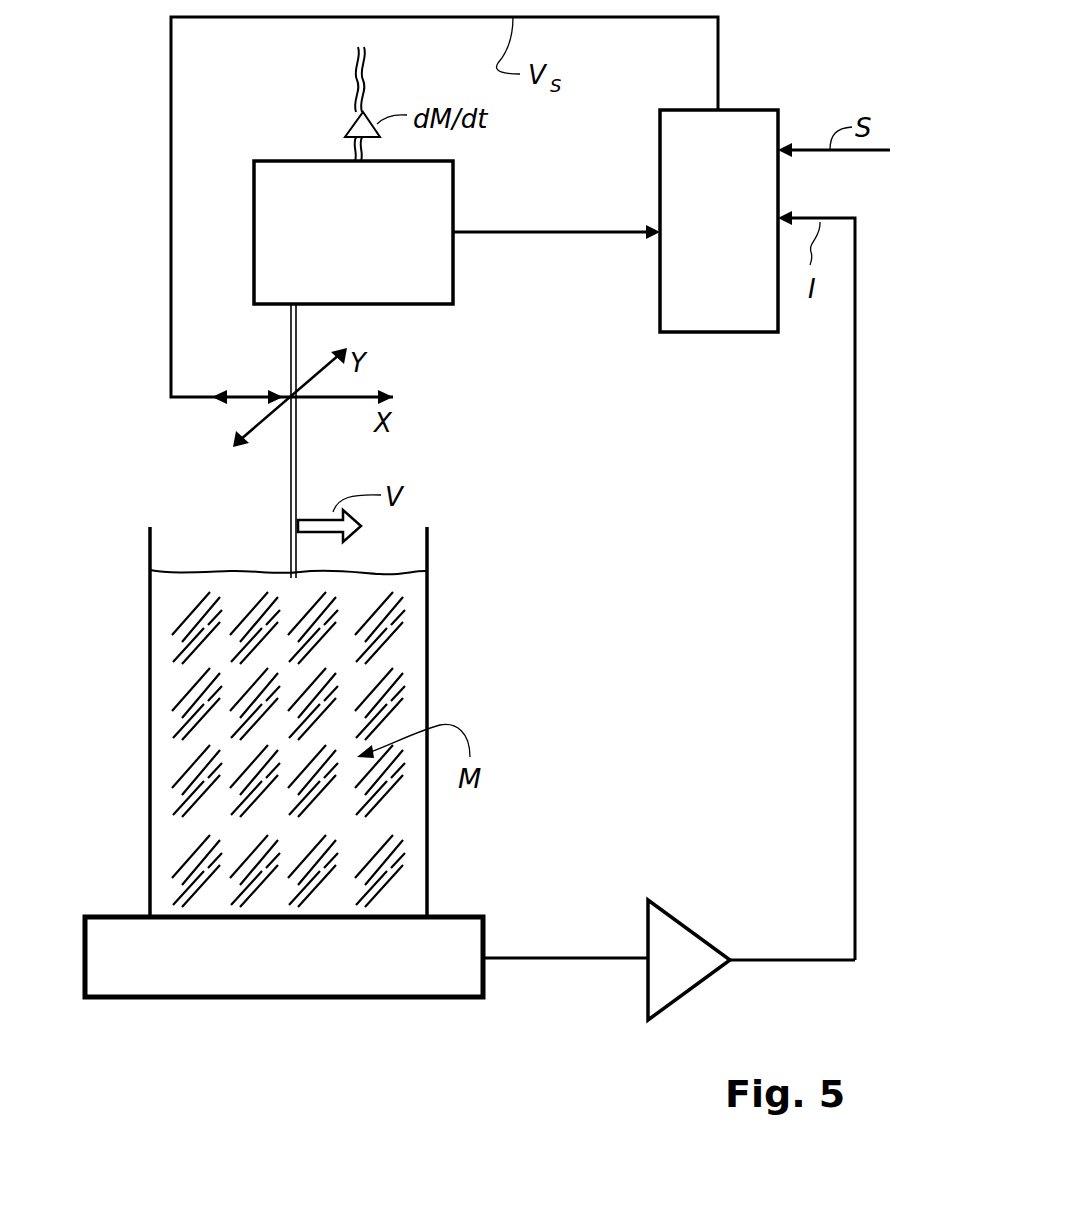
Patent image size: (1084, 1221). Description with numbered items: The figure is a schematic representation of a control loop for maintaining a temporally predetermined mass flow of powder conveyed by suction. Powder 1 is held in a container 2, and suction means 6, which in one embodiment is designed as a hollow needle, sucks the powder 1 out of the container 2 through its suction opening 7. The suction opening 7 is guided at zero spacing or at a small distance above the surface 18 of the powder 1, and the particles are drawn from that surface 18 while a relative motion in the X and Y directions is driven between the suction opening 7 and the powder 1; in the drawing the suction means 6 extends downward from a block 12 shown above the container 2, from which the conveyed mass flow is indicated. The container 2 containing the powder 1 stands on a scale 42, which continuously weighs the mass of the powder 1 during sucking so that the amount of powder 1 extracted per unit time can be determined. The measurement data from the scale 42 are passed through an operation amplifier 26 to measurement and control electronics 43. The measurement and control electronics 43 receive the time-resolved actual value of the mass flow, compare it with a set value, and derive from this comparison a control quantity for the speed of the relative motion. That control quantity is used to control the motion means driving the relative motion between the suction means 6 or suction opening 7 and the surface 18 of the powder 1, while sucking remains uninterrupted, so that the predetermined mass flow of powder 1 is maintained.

The powder 1 is at (370, 663).
The container 2 is at (150, 668).
The suction means 6 is at (297, 443).
The suction opening 7 is at (275, 571).
The light source / laser 12 is at (377, 258).
The surface of powder 18 is at (210, 558).
The operation amplifier 26 is at (678, 938).
The scale 42 is at (232, 973).
The measurement and control electronics 43 is at (749, 218).